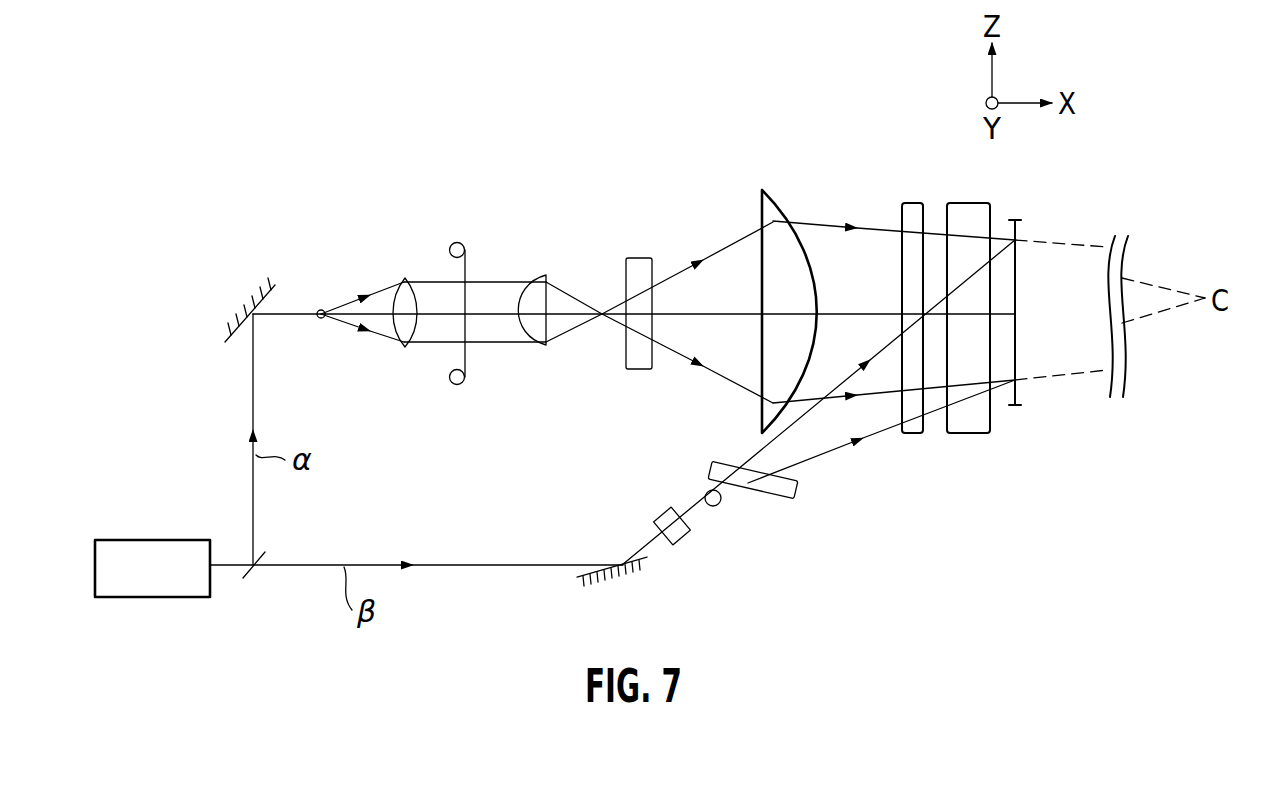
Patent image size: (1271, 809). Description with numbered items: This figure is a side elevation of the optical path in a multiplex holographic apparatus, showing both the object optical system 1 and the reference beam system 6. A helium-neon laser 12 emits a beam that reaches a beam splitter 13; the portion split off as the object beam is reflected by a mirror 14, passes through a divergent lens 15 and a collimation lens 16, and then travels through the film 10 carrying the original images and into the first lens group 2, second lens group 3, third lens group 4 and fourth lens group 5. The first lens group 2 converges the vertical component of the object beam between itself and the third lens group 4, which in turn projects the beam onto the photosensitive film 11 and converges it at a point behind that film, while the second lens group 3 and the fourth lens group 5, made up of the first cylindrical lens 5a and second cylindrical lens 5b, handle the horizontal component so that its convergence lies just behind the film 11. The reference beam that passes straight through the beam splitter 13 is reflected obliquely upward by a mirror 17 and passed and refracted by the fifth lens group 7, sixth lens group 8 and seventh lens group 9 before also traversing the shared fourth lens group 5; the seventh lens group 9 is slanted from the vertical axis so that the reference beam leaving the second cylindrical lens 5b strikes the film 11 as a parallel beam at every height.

The object optical system 1 is at (661, 196).
The first lens group 2 is at (543, 347).
The second lens group 3 is at (641, 258).
The third lens group 4 is at (762, 214).
The fourth lens group 5 is at (949, 325).
The first cylindrical lens 5a is at (905, 435).
The second cylindrical lens 5b is at (970, 435).
The reference beam system 6 is at (851, 522).
The fifth lens group 7 is at (682, 541).
The sixth lens group 8 is at (705, 495).
The seventh lens group 9 is at (782, 499).
The film 10 is at (468, 266).
The film 11 is at (1018, 232).
The helium-neon laser 12 is at (152, 540).
The beam splitter 13 is at (266, 553).
The mirror 14 is at (233, 340).
The divergent lens 15 is at (322, 320).
The collimation lens 16 is at (398, 277).
The mirror 17 is at (572, 572).